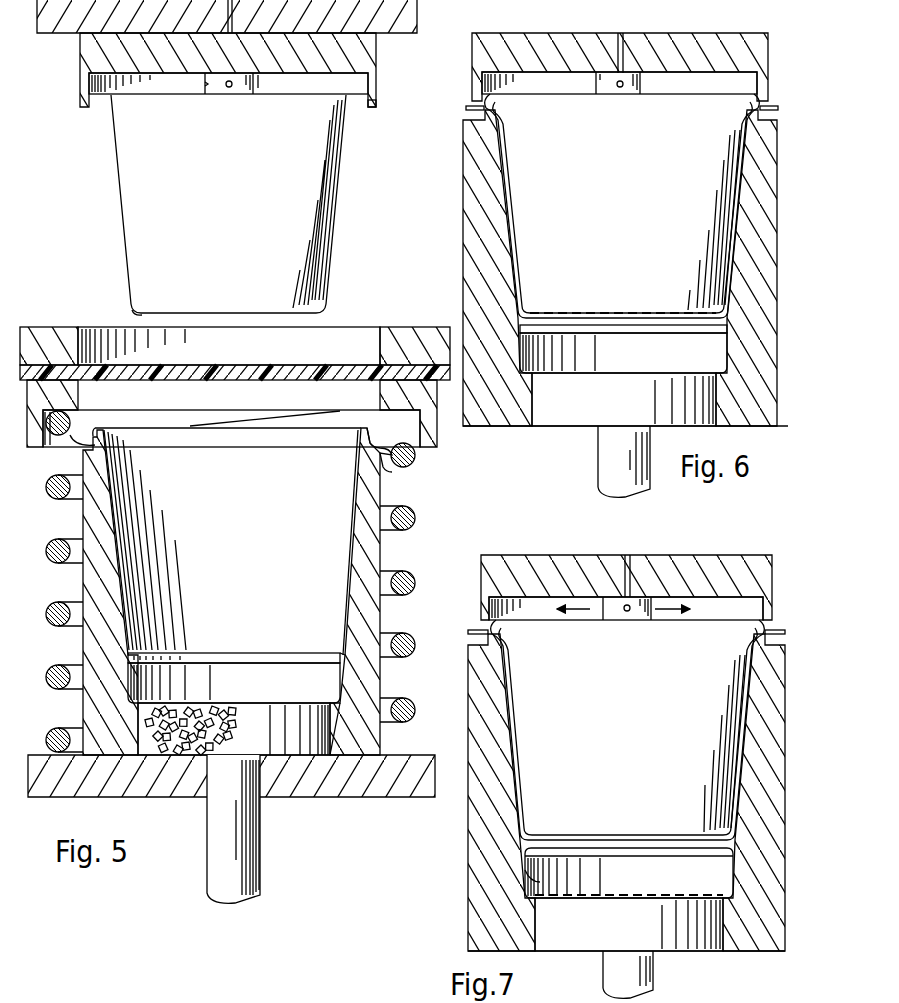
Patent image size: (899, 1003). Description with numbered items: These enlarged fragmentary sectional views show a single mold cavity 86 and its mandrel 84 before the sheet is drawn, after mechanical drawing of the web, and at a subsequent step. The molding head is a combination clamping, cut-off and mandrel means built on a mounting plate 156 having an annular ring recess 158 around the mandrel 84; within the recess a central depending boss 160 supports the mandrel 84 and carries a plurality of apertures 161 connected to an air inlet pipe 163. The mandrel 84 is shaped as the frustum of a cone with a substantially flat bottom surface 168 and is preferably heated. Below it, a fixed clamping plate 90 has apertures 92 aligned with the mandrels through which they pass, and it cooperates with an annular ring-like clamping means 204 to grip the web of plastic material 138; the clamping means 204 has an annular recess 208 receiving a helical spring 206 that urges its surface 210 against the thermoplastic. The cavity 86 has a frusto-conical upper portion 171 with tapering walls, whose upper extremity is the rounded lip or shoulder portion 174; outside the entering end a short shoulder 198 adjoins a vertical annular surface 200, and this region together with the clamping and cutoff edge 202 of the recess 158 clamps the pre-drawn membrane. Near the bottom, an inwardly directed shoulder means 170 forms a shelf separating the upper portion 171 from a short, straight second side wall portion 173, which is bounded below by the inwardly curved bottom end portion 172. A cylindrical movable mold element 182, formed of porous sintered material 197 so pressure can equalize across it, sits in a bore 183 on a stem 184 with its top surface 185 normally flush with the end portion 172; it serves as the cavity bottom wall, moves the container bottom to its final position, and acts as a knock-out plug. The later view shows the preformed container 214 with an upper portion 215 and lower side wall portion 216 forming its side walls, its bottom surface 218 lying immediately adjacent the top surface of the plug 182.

In FIG. 5, the mandrel 84 is at (136, 164).
In FIG. 6, the mandrel 84 is at (525, 150).
In FIG. 5, the cavity 86 is at (246, 518).
In FIG. 6, the cavity 86 is at (770, 214).
In FIG. 5, the fixed clamping plate 90 is at (395, 330).
In FIG. 5, the apertures 92 is at (345, 332).
In FIG. 5, the web of plastic material 138 is at (262, 368).
In FIG. 5, the mounting plate 156 is at (365, 57).
In FIG. 6, the mounting plate 156 is at (757, 62).
In FIG. 5, the annular ring recess 158 is at (356, 100).
In FIG. 5, the central depending boss 160 is at (218, 94).
In FIG. 5, the apertures 161 is at (232, 88).
In FIG. 7, the apertures 161 is at (624, 611).
In FIG. 7, the air inlet pipe 163 is at (627, 566).
In FIG. 5, the flat bottom surface 168 is at (165, 316).
In FIG. 5, the shoulder means 170 is at (338, 662).
In FIG. 5, the upper portion of cavity side wall 171 is at (345, 545).
In FIG. 5, the inwardly curved bottom end portion 172 is at (343, 725).
In FIG. 5, the second side wall portion 173 is at (335, 677).
In FIG. 7, the second side wall portion 173 is at (735, 881).
In FIG. 5, the lip or shoulder portion 174 is at (355, 430).
In FIG. 5, the movable mold element 182 is at (288, 762).
In FIG. 7, the movable mold element 182 is at (668, 935).
In FIG. 5, the bore 183 is at (150, 740).
In FIG. 7, the bore 183 is at (730, 924).
In FIG. 5, the stem 184 is at (245, 882).
In FIG. 6, the stem 184 is at (608, 470).
In FIG. 5, the top surface 185 is at (258, 703).
In FIG. 6, the top surface 185 is at (630, 378).
In FIG. 5, the porous sintered material 197 is at (195, 745).
In FIG. 5, the short shoulder 198 is at (415, 452).
In FIG. 5, the vertical annular surface 200 is at (385, 470).
In FIG. 5, the clamping and cutoff edge 202 is at (375, 103).
In FIG. 5, the annular ring-like clamping means 204 is at (424, 444).
In FIG. 5, the helical spring 206 is at (417, 518).
In FIG. 5, the annular recess 208 is at (424, 432).
In FIG. 5, the surface 210 is at (418, 380).
In FIG. 7, the preformed container 214 is at (550, 782).
In FIG. 7, the upper portion 215 is at (748, 665).
In FIG. 7, the lower side wall portion 216 is at (527, 880).
In FIG. 6, the bottom surface of preformed container 218 is at (618, 312).
In FIG. 7, the bottom surface of preformed container 218 is at (628, 895).